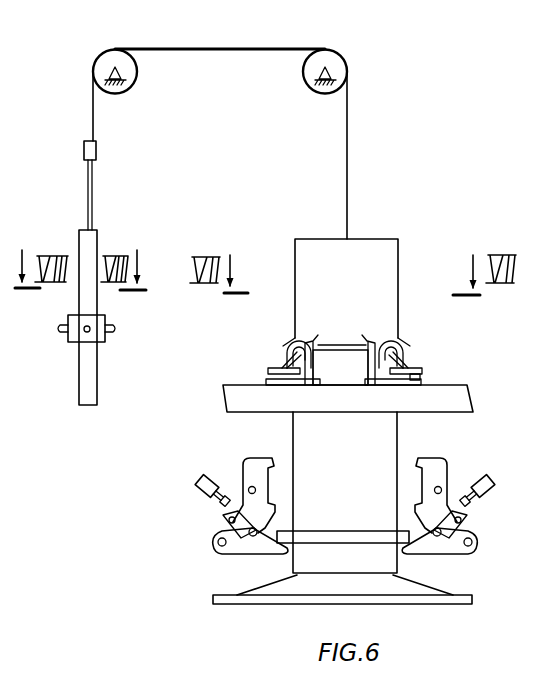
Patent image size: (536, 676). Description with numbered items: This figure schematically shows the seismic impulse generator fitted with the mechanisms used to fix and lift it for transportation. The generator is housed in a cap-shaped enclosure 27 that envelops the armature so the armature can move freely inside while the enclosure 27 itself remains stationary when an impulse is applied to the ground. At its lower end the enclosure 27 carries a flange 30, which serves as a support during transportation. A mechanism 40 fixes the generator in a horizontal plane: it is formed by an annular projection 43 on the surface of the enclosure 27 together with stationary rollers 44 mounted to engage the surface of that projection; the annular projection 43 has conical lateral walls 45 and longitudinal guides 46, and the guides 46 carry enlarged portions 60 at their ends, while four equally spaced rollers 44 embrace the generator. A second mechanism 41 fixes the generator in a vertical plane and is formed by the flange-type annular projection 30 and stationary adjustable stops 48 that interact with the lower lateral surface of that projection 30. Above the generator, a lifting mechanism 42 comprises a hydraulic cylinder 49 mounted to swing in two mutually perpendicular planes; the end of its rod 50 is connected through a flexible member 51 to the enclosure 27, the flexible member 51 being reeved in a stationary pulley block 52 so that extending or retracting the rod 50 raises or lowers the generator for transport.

The enclosure 27 is at (301, 250).
The flange 30 is at (360, 534).
The mechanism for fixing the generator in a horizontal plane 40 is at (360, 380).
The mechanism for fixing the generator in a vertical plane 41 is at (223, 553).
The lifting mechanism 42 is at (82, 152).
The annular projection 43 is at (336, 362).
The rollers 44 is at (405, 347).
The conical lateral walls 45 is at (290, 338).
The longitudinal guides 46 is at (372, 372).
The adjustable stops 48 is at (225, 528).
The hydraulic cylinder 49 is at (80, 358).
The rod 50 is at (87, 190).
The flexible member 51 is at (209, 46).
The pulley block 52 is at (307, 72).
The enlarged portions 60 is at (365, 337).